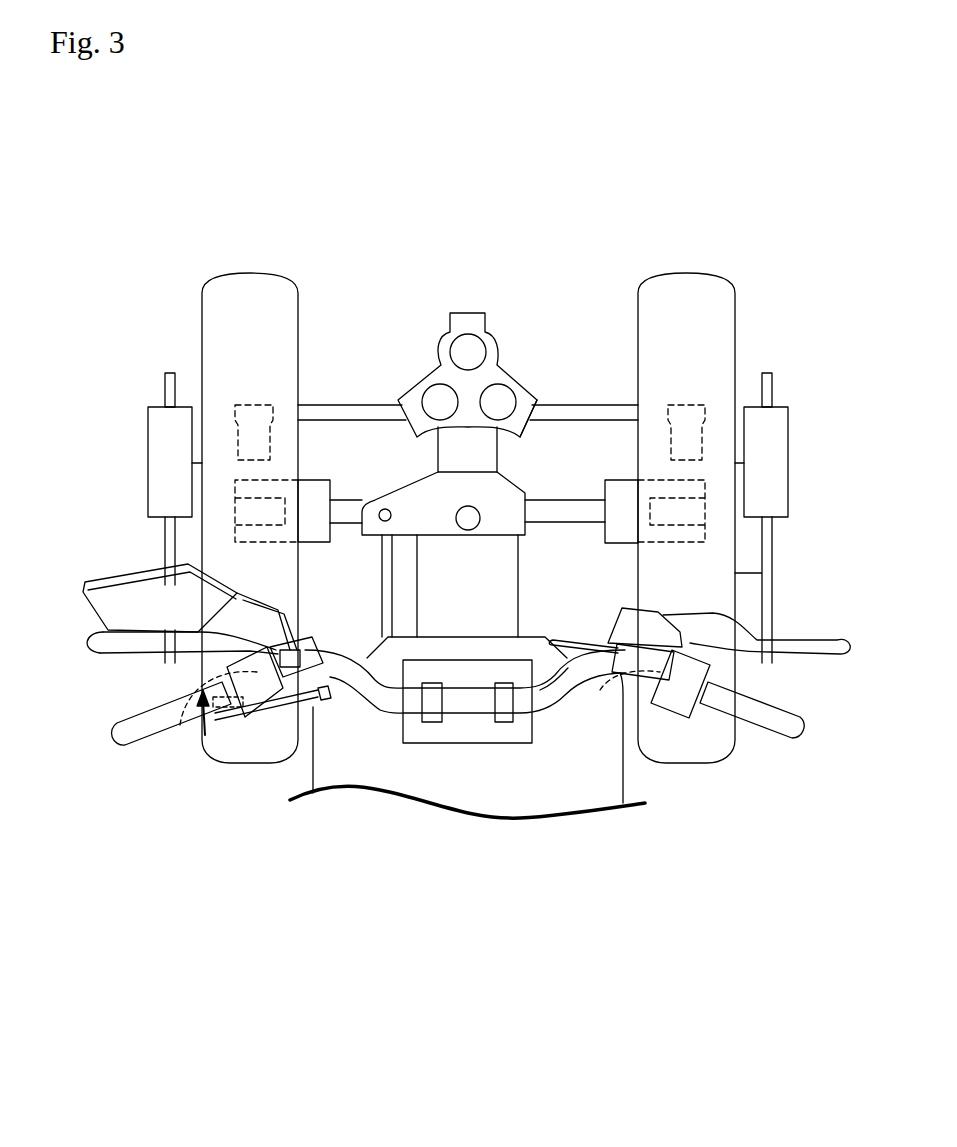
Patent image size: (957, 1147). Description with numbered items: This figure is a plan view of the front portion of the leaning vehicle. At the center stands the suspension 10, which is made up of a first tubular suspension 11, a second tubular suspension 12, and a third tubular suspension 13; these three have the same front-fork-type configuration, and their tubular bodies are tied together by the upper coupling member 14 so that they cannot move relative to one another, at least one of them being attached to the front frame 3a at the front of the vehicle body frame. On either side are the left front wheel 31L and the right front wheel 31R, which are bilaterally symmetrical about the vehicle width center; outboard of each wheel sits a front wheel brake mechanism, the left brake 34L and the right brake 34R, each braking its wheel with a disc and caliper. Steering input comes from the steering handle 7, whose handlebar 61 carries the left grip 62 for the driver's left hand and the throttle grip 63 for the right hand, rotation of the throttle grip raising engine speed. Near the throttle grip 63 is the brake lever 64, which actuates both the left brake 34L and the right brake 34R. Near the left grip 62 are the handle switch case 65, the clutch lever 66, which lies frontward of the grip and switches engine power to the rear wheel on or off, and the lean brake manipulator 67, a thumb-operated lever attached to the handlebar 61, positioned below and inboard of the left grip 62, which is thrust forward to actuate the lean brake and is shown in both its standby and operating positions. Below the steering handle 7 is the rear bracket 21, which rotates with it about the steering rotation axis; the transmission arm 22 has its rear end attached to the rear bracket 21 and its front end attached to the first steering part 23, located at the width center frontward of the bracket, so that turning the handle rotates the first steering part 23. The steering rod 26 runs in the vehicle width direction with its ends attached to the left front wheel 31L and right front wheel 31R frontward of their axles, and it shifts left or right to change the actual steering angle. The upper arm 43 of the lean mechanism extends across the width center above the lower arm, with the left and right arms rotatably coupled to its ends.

The front frame 3a is at (510, 577).
The steering handle 7 is at (440, 785).
The suspension 10 is at (468, 309).
The first tubular suspension 11 is at (448, 350).
The second tubular suspension 12 is at (432, 393).
The third tubular suspension 13 is at (505, 395).
The upper coupling member 14 is at (523, 407).
The rear bracket 21 is at (375, 655).
The transmission arm 22 is at (380, 555).
The first steering part 23 is at (425, 470).
The steering rod 26 is at (335, 412).
The left front wheel 31L is at (253, 268).
The right front wheel 31R is at (690, 268).
The left brake 34L is at (148, 393).
The right brake 34R is at (790, 393).
The upper arm 43 is at (557, 500).
The handlebar 61 is at (550, 707).
The left grip 62 is at (157, 740).
The throttle grip 63 is at (780, 723).
The brake lever 64 is at (807, 652).
The handle switch case 65 is at (222, 700).
The clutch lever 66 is at (123, 650).
The lean brake manipulator 67 is at (227, 720).